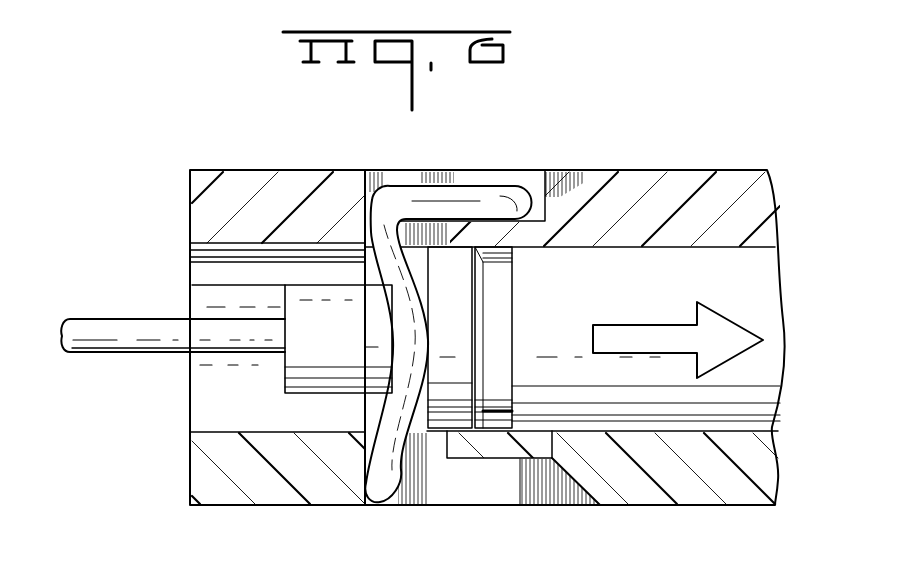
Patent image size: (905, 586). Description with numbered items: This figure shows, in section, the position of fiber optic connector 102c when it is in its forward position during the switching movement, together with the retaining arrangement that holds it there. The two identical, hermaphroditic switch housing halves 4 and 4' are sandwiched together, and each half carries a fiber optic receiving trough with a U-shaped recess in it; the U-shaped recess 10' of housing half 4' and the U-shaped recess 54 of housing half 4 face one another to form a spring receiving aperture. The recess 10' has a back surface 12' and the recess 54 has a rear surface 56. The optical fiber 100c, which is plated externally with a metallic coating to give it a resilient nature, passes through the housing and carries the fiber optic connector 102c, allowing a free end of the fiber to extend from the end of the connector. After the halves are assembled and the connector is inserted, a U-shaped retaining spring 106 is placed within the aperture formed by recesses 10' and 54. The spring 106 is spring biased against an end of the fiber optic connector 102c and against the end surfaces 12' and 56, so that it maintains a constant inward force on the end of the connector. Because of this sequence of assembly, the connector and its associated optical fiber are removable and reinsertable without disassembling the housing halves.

The switch housing half 4 is at (586, 499).
The switch housing half 4' is at (575, 302).
The U-shaped recess 10' is at (510, 165).
The back surface 12' is at (288, 314).
The U-shaped recess 54 is at (512, 482).
The rear surface 56 is at (373, 506).
The optical fiber 100c is at (132, 340).
The fiber optic connector 102c is at (605, 297).
The U-shaped retaining spring 106 is at (400, 303).